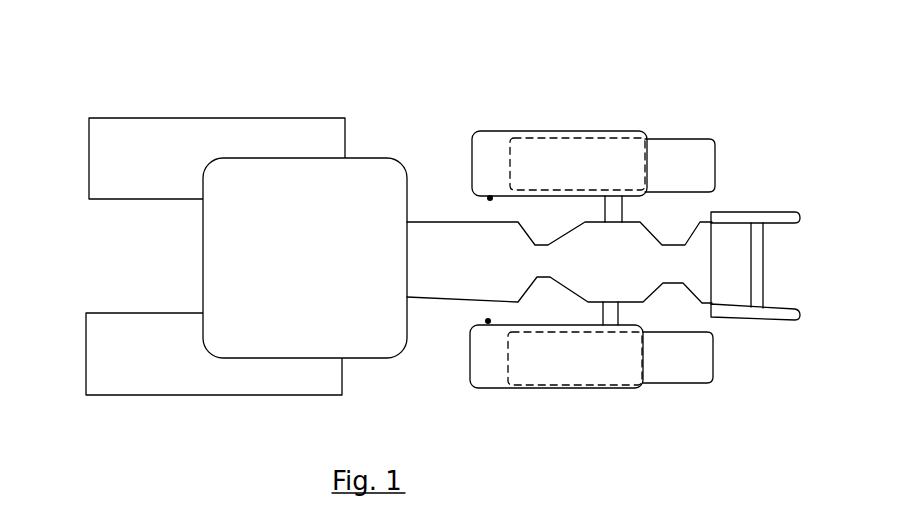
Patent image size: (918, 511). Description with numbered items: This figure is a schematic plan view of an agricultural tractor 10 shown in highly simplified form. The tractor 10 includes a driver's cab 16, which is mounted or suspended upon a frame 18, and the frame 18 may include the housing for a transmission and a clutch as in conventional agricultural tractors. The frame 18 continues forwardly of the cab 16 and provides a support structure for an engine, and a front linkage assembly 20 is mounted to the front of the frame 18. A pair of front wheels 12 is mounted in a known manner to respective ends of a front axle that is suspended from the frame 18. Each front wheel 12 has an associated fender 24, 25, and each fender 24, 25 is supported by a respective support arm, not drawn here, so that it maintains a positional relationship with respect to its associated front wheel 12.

The agricultural tractor 10 is at (104, 62).
The front wheels 12 is at (715, 139).
The driver's cab 16 is at (383, 157).
The frame 18 is at (432, 299).
The front linkage assembly 20 is at (785, 192).
The fender 24 is at (554, 130).
The fender 25 is at (522, 388).